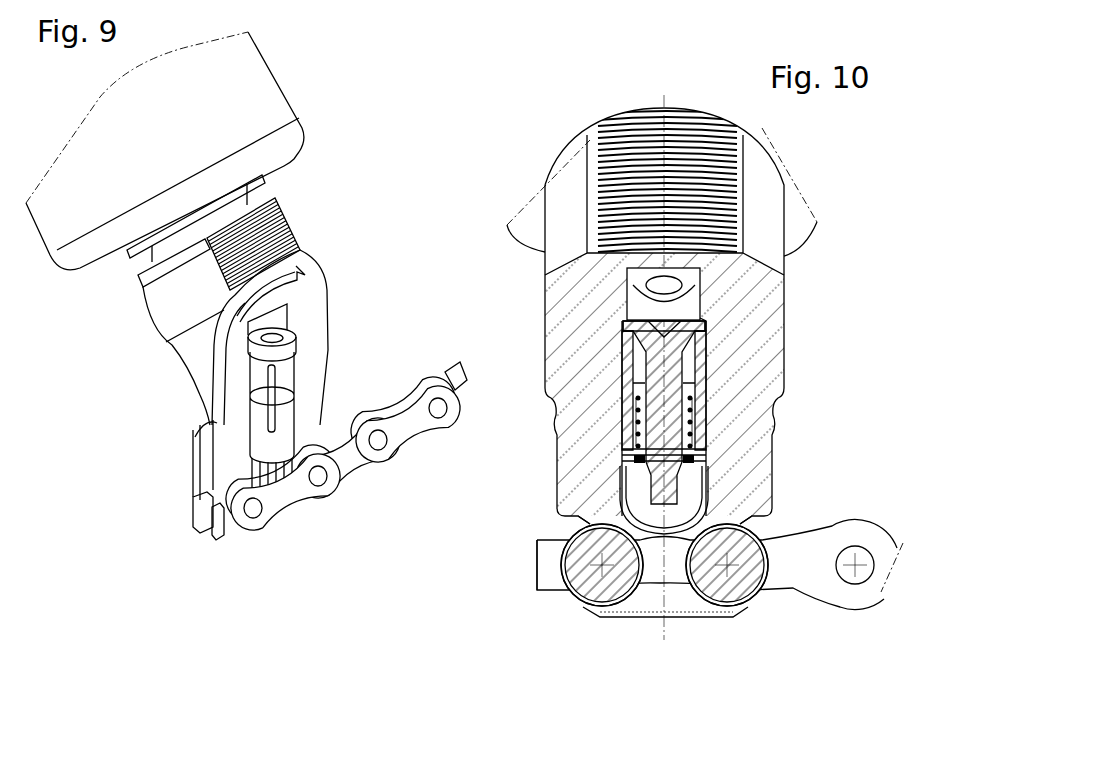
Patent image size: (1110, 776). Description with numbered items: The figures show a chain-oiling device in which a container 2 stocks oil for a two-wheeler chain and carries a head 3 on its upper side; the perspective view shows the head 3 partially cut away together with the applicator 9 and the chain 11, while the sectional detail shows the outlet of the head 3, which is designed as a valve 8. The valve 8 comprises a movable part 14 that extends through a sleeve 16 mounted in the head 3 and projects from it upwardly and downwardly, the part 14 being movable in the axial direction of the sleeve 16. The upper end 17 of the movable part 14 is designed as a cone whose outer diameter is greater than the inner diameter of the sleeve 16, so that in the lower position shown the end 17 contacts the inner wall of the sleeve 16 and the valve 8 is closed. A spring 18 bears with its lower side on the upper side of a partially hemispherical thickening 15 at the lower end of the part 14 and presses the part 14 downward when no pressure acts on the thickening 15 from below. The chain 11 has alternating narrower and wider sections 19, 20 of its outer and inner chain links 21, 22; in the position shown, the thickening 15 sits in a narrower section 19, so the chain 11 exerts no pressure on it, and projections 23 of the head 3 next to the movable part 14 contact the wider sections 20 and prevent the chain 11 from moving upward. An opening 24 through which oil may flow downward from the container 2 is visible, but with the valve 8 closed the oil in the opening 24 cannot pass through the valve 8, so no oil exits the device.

In FIG. 9, the container 2 is at (258, 80).
In FIG. 10, the container 2 is at (529, 205).
In FIG. 9, the head 3 is at (172, 352).
In FIG. 10, the head 3 is at (553, 470).
In FIG. 10, the valve 8 is at (703, 322).
In FIG. 9, the applicator 9 is at (346, 469).
In FIG. 9, the chain 11 is at (222, 535).
In FIG. 10, the chain 11 is at (540, 587).
In FIG. 9, the movable part 14 is at (283, 340).
In FIG. 10, the movable part 14 is at (683, 358).
In FIG. 10, the partially hemispherical thickening 15 is at (690, 488).
In FIG. 9, the sleeve 16 is at (285, 380).
In FIG. 10, the sleeve 16 is at (628, 383).
In FIG. 10, the upper end 17 is at (680, 333).
In FIG. 10, the spring 18 is at (690, 412).
In FIG. 10, the narrower section 19 is at (790, 585).
In FIG. 10, the wider section 20 is at (724, 602).
In FIG. 9, the outer chain link 21 is at (277, 495).
In FIG. 9, the inner chain link 22 is at (342, 450).
In FIG. 10, the projection 23 is at (722, 513).
In FIG. 10, the opening 24 is at (785, 252).